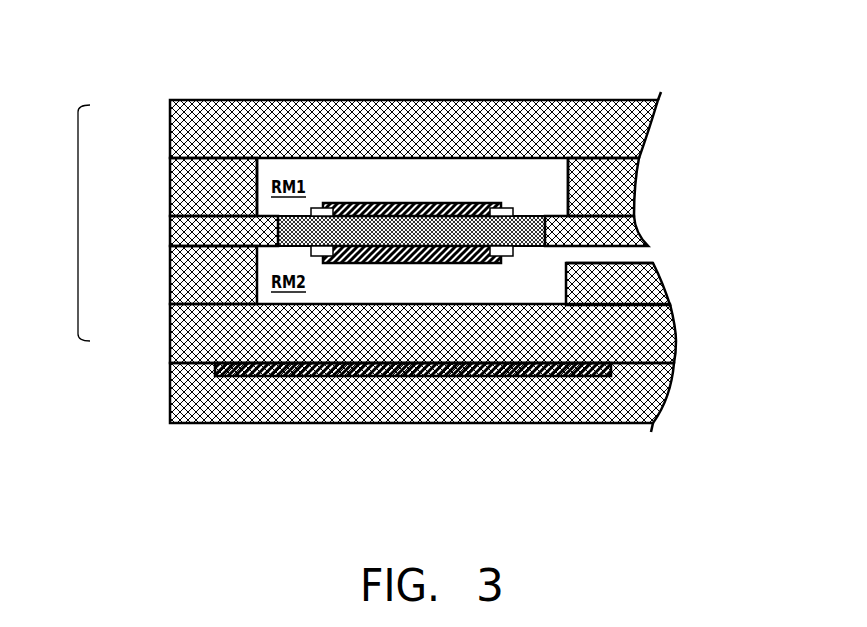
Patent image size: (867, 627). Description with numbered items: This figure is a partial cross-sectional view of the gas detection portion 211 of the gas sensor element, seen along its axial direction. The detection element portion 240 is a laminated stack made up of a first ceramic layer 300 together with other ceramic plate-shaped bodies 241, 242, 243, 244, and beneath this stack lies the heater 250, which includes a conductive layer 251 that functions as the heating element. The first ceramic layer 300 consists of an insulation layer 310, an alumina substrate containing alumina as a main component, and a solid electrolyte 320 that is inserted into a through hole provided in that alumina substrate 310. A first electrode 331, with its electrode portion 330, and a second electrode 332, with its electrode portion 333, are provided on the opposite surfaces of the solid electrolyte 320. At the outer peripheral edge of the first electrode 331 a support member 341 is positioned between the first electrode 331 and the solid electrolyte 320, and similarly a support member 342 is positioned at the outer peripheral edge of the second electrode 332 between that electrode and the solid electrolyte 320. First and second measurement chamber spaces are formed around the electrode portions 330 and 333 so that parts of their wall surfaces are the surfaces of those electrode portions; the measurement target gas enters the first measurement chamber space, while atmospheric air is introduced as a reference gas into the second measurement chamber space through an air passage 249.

The gas detection portion 211 is at (698, 82).
The detection element portion 240 is at (70, 218).
The ceramic plate-shaped body 241 is at (162, 121).
The ceramic plate-shaped body 242 is at (162, 179).
The ceramic plate-shaped body 243 is at (162, 272).
The ceramic plate-shaped body 244 is at (162, 327).
The air passage 249 is at (640, 248).
The heater 250 is at (162, 384).
The conductive layer 251 is at (588, 370).
The first ceramic layer 300 is at (370, 157).
The insulation layer 310 is at (207, 213).
The solid electrolyte 320 is at (388, 196).
The electrode portion 330 is at (422, 262).
The first electrode 331 is at (447, 196).
The second electrode 332 is at (423, 255).
The electrode portion 333 is at (412, 366).
The support member 341 is at (313, 199).
The support member 342 is at (307, 249).